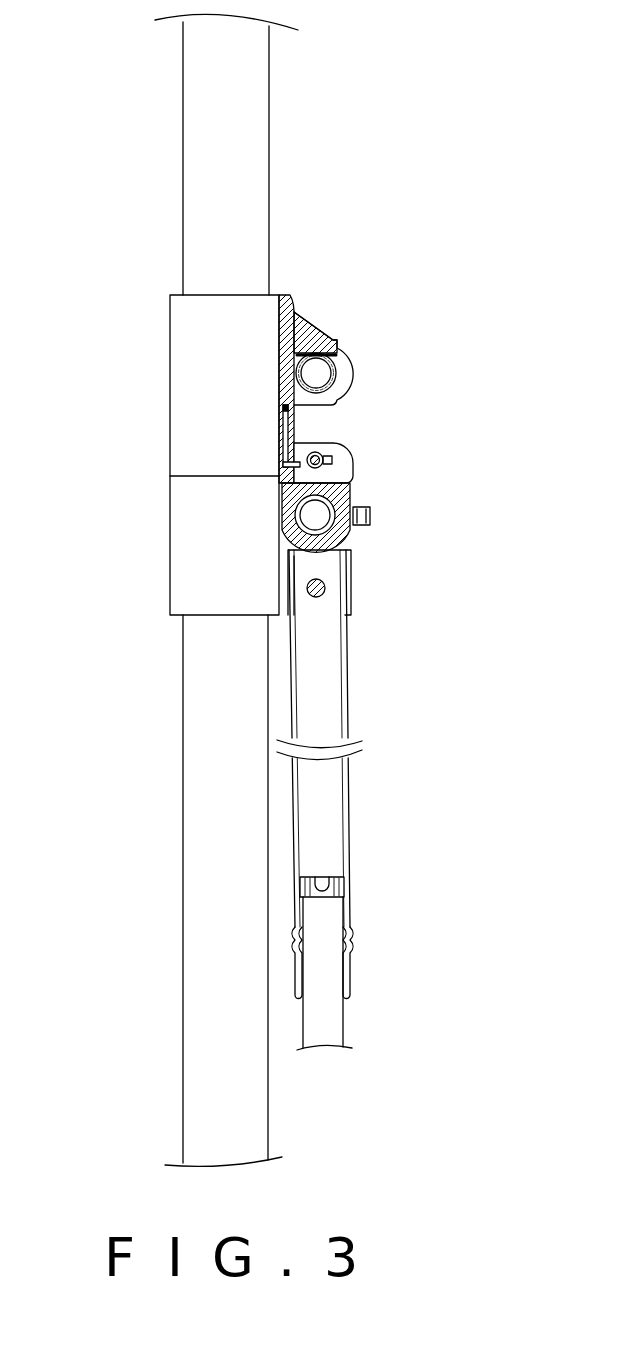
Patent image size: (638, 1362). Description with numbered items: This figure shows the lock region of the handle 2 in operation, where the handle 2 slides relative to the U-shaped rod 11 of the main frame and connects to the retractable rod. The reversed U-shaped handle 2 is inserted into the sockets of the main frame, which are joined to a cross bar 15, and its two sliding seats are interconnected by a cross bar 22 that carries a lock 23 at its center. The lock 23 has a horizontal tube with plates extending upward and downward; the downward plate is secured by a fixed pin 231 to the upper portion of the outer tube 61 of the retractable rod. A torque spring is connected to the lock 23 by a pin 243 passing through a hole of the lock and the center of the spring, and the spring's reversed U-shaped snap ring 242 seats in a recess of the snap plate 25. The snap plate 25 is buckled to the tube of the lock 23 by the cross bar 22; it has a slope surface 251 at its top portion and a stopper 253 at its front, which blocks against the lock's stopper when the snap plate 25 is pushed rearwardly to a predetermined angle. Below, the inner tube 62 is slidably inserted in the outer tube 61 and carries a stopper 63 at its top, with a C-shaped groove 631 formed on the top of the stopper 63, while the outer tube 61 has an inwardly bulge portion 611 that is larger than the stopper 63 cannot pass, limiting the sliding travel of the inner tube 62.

The handle 2 is at (247, 143).
The U-shaped rod 11 is at (197, 712).
The snap plate 25 is at (315, 298).
The slope surface 251 is at (305, 343).
The cross bar 15 is at (336, 375).
The snap ring 242 is at (290, 437).
The pin 243 is at (325, 458).
The stopper 253 is at (362, 517).
The cross bar 22 is at (350, 527).
The lock 23 is at (347, 545).
The fixed pin 231 is at (325, 590).
The outer tube 61 is at (348, 780).
The C-shaped groove 631 is at (322, 884).
The stopper 63 is at (348, 885).
The inwardly bulge portion 611 is at (352, 925).
The inner tube 62 is at (322, 1025).